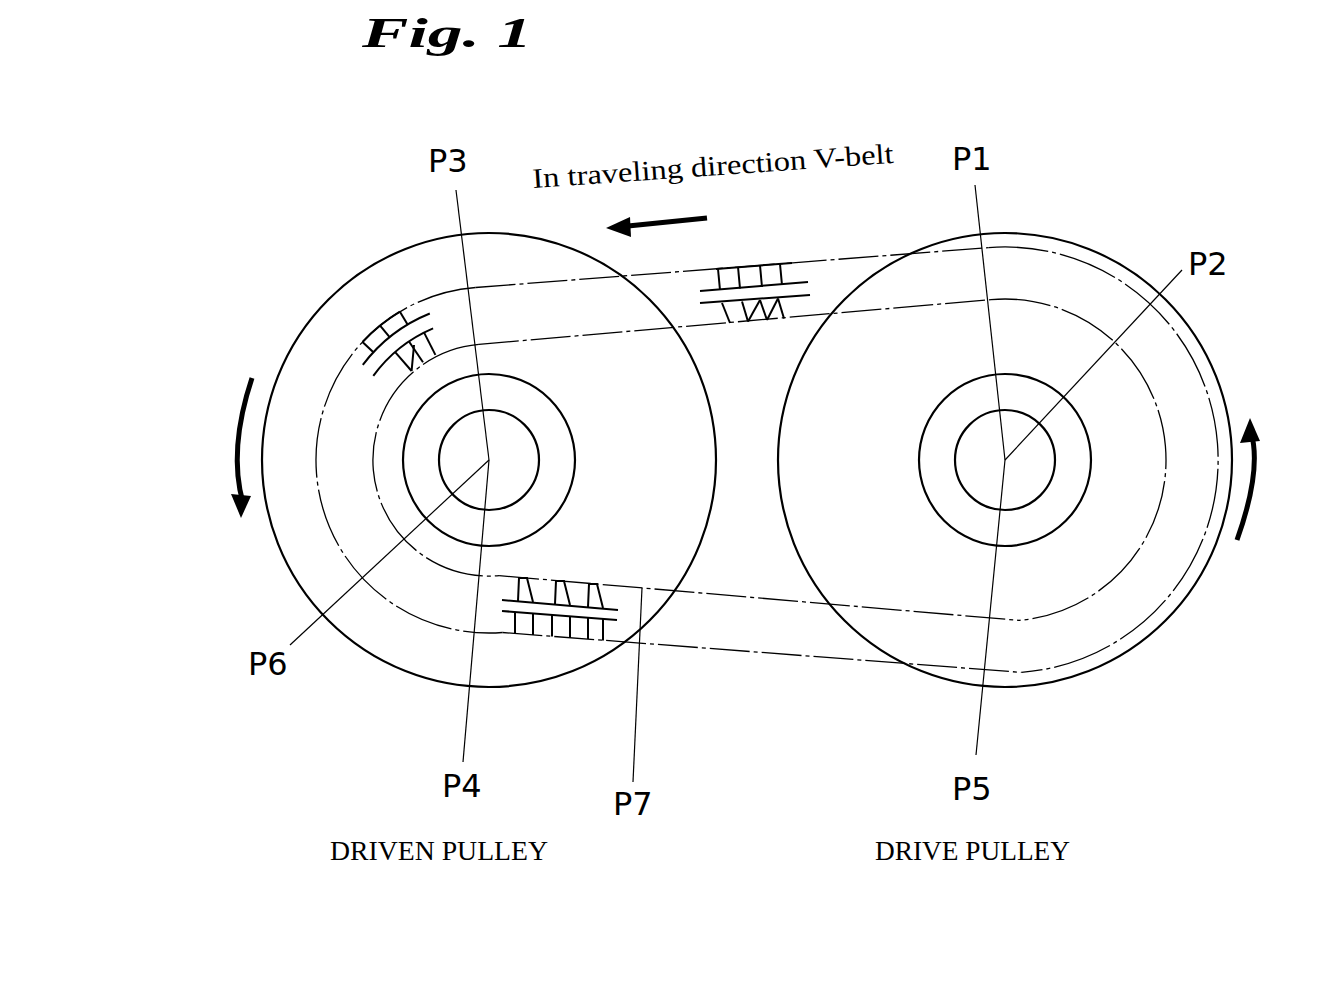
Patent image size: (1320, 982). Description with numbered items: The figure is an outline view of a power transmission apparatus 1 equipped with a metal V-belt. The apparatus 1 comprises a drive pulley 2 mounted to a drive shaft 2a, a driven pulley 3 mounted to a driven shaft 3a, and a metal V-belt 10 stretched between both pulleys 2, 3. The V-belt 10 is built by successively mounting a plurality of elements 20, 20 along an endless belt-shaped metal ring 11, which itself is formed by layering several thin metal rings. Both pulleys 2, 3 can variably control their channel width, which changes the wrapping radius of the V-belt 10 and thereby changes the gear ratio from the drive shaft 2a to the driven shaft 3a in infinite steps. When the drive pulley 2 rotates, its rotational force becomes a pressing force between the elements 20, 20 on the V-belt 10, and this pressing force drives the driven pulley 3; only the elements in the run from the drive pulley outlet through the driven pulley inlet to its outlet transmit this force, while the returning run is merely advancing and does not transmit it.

The power transmission apparatus 1 is at (1043, 122).
The drive pulley 2 is at (1085, 670).
The drive shaft 2a is at (955, 452).
The driven pulley 3 is at (346, 648).
The driven shaft 3a is at (540, 449).
The metal V-belt 10 is at (783, 660).
The metal ring 11 is at (795, 283).
The element 20 is at (749, 268).